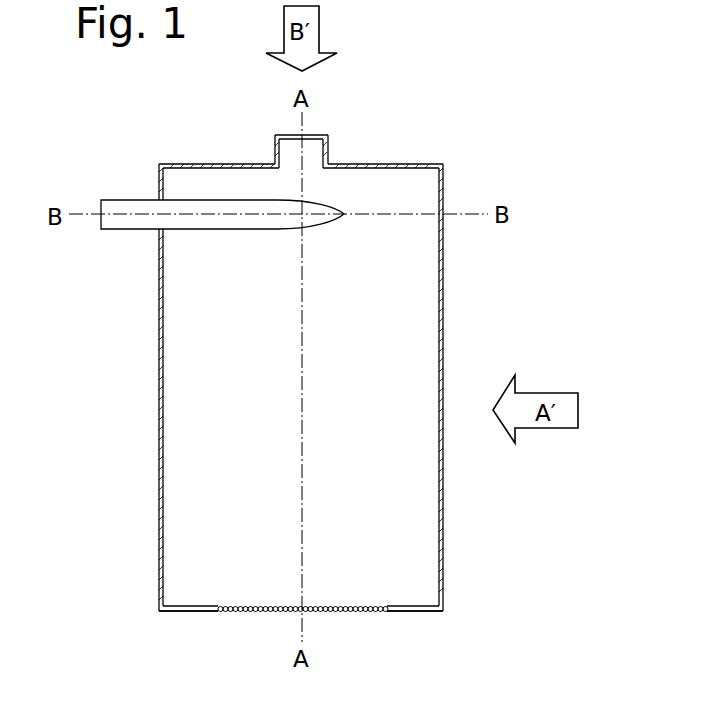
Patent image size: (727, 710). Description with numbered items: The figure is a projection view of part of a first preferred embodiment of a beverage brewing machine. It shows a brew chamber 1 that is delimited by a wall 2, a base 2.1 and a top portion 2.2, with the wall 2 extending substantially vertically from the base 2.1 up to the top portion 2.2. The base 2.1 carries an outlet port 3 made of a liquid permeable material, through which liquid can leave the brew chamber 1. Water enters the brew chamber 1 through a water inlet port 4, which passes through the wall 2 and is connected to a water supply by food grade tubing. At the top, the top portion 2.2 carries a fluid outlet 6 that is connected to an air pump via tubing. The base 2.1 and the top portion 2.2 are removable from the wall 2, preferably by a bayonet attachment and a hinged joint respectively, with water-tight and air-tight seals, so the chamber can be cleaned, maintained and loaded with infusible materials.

The brew chamber 1 is at (502, 170).
The wall 2 is at (443, 290).
The base 2.1 is at (420, 610).
The top portion 2.2 is at (386, 163).
The outlet port 3 is at (222, 611).
The water inlet port 4 is at (122, 199).
The fluid outlet 6 is at (316, 146).